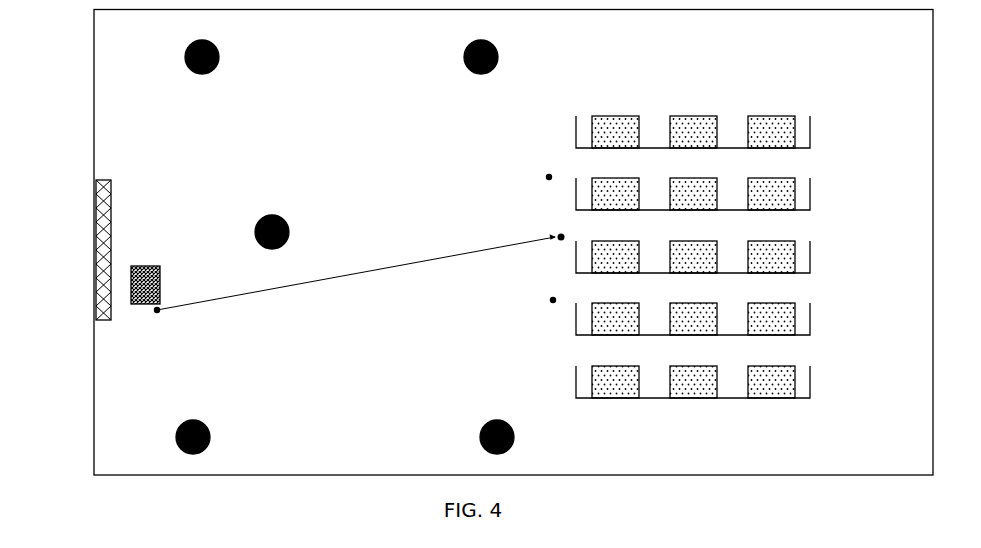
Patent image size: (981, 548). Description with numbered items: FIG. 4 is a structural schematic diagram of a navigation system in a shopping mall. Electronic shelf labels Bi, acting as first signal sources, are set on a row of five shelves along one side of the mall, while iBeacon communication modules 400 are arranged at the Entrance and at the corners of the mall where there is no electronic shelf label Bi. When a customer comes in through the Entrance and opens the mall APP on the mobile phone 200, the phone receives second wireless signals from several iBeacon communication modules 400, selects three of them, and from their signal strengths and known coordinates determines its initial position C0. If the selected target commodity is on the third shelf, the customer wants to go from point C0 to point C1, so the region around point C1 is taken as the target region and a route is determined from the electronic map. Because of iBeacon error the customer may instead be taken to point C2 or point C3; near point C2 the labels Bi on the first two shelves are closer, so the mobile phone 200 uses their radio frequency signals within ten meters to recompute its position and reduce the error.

The mobile terminal 200 is at (153, 265).
The iBeacon communication module 400 is at (482, 75).
The electronic shelf label Bi is at (774, 130).
The initial position C0 is at (155, 321).
The target point C1 is at (559, 225).
The point reached after navigation error C2 is at (544, 167).
The point reached after navigation error C3 is at (549, 290).
The entrance Entrance is at (97, 242).